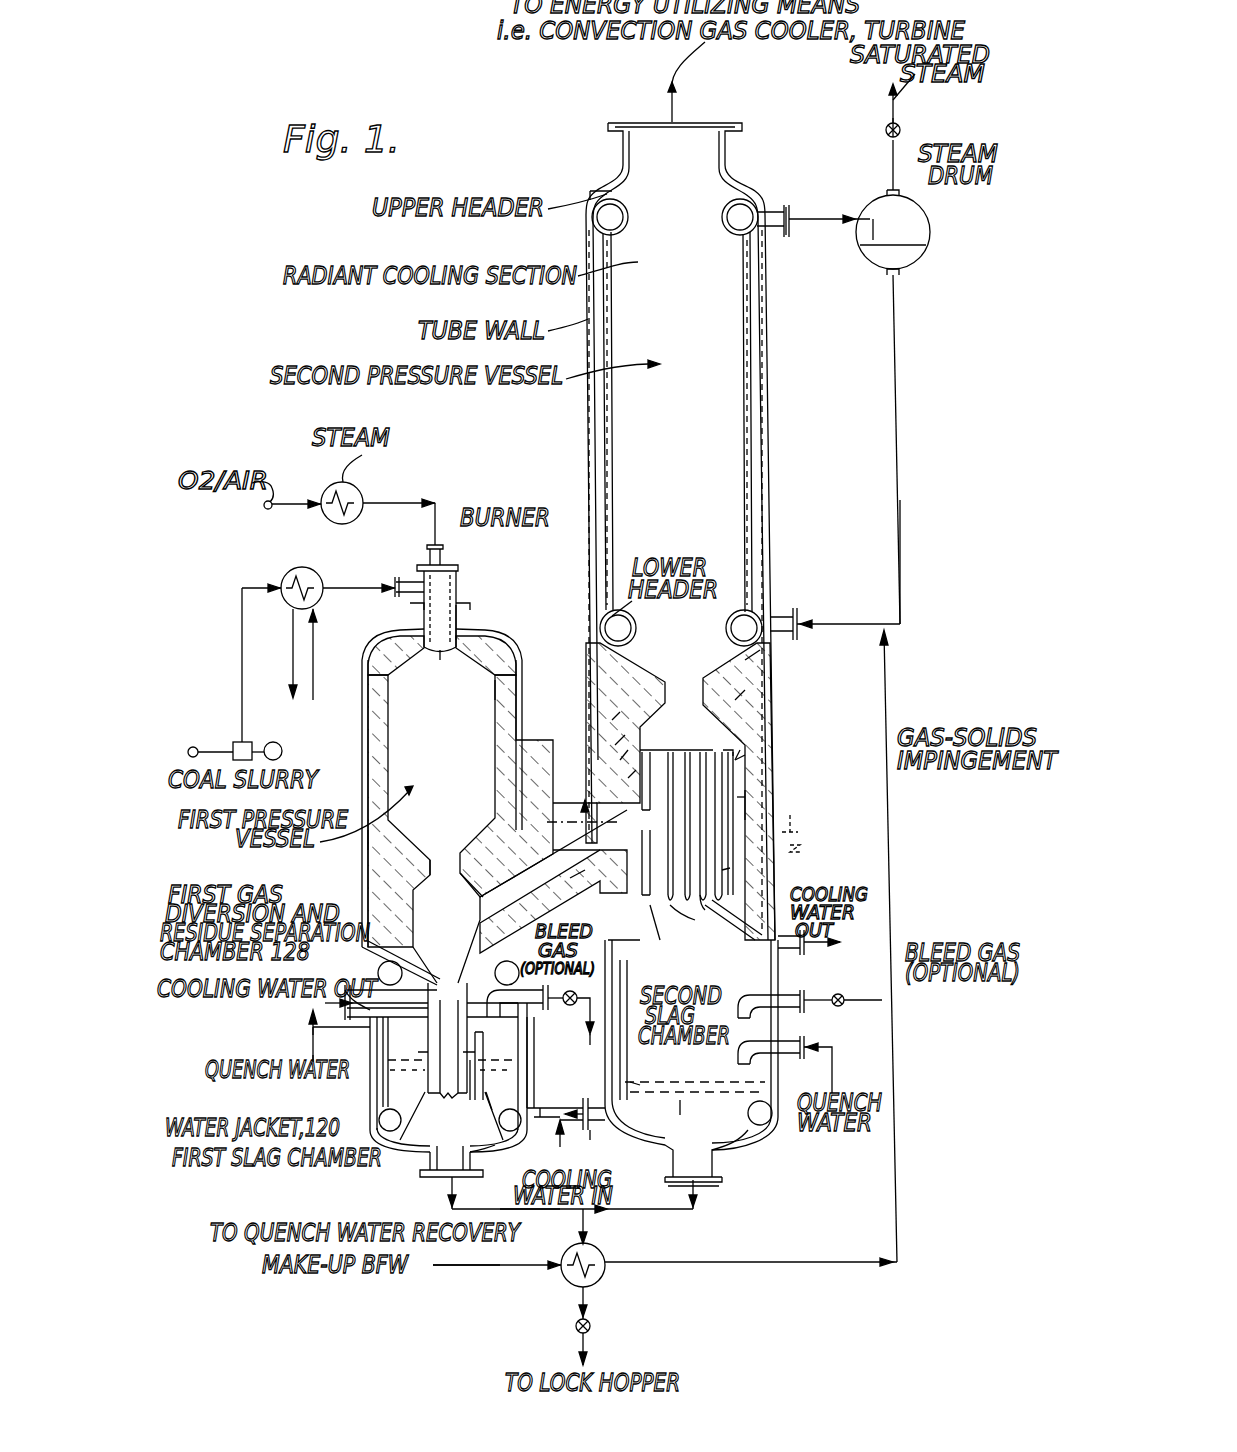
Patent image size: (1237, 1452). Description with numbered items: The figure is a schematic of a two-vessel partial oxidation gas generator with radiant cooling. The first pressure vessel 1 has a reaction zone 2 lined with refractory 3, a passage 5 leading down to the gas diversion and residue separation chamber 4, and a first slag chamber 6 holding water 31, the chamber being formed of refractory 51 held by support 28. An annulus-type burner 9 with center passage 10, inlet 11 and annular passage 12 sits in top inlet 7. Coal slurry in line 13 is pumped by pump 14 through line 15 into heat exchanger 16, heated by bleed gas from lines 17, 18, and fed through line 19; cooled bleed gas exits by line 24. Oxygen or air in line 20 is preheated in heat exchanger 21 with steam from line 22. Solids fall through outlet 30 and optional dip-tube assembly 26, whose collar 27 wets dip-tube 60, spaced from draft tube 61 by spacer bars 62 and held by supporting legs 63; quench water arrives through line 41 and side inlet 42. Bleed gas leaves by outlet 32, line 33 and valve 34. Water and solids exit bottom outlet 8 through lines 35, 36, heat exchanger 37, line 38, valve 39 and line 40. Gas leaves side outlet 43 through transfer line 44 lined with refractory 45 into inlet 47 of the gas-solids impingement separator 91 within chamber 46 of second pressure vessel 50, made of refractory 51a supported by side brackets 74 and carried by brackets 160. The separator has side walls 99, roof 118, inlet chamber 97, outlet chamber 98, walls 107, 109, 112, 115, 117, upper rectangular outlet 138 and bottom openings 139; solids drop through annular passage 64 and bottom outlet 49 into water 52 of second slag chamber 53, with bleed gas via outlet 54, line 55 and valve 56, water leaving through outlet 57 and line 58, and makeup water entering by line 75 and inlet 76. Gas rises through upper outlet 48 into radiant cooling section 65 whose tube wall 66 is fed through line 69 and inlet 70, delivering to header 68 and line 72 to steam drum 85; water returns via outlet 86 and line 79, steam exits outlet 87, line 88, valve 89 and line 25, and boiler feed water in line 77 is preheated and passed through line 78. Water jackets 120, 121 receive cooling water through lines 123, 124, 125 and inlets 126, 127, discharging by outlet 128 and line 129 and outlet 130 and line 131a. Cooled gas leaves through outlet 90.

The pressure vessel 1 is at (441, 788).
The reaction zone 2 is at (460, 791).
The refractory 3 is at (495, 685).
The gas diversion and residue separation chamber 4 is at (437, 947).
The passage 5 is at (444, 865).
The first slag chamber 6 is at (573, 1051).
The top inlet 7 is at (458, 625).
The bottom outlet 8 is at (480, 1160).
The annulus-type burner 9 is at (456, 590).
The center passage 10 is at (428, 555).
The inlet 11 is at (402, 585).
The annular passage 12 is at (460, 605).
The line 13 is at (195, 746).
The pump 14 is at (250, 740).
The line 15 is at (242, 632).
The heat exchanger 16 is at (290, 578).
The insulated line 17 is at (584, 1058).
The insulated line 18 is at (852, 1002).
The line 19 is at (337, 583).
The line 20 is at (293, 500).
The heat exchanger 21 is at (325, 498).
The line 22 is at (372, 470).
The line 24 is at (290, 655).
The line 25 is at (890, 118).
The dip-tube assembly 26 is at (440, 1030).
The water distribution collar 27 is at (415, 980).
The support 28 is at (395, 960).
The outlet 30 is at (455, 975).
The water 31 is at (418, 1150).
The refractory lined outlet 32 is at (530, 1020).
The insulated line 33 is at (582, 1025).
The water cooled control valve 34 is at (571, 992).
The line 35 is at (450, 1190).
The line 36 is at (583, 1212).
The heat exchanger 37 is at (598, 1245).
The line 38 is at (586, 1308).
The valve 39 is at (592, 1330).
The line 40 is at (582, 1352).
The line 41 is at (310, 1032).
The side inlet 42 is at (340, 1050).
The side outlet 43 is at (488, 905).
The transfer line 44 is at (570, 878).
The refractory 45 is at (540, 845).
The second gas diversion and residue separation chamber 46 is at (665, 712).
The inlet 47 is at (625, 802).
The upper outlet 48 is at (690, 708).
The bottom outlet 49 is at (668, 942).
The second pressure vessel 50 is at (762, 420).
The thermal refractory material 51 is at (385, 864).
The thermal refractory material 51a is at (745, 790).
The water 52 is at (690, 1188).
The second slag chamber 53 is at (689, 1049).
The refractory lined outlet 54 is at (805, 995).
The insulated line 55 is at (828, 998).
The water cooled valve 56 is at (843, 996).
The central outlet 57 is at (675, 1148).
The line 58 is at (660, 1210).
The dip-tube 60 is at (450, 1040).
The draft tube 61 is at (530, 1070).
The spacer bars 62 is at (478, 1048).
The supporting legs 63 is at (430, 1126).
The annular passage 64 is at (738, 797).
The radiant cooling section 65 is at (665, 430).
The tube wall 66 is at (762, 358).
The annular header 68 is at (723, 217).
The line 69 is at (820, 618).
The inlet 70 is at (760, 612).
The line 72 is at (800, 213).
The side brackets 74 is at (770, 207).
The line 75 is at (833, 1060).
The inlet 76 is at (808, 1044).
The line 77 is at (452, 1268).
The line 78 is at (885, 688).
The line 79 is at (900, 627).
The steam drum 85 is at (928, 240).
The bottom outlet 86 is at (900, 276).
The upper outlet 87 is at (890, 196).
The line 88 is at (898, 153).
The valve 89 is at (903, 125).
The outlet 90 is at (722, 137).
The gas-solids impingement separator 91 is at (763, 807).
The upstream vertical inlet chamber 97 is at (640, 785).
The downstream vertical outlet chamber 98 is at (825, 848).
The side walls 99 is at (745, 735).
The upstream vertical concave wall 107 is at (638, 745).
The upstream vertical concave wall 109 is at (745, 680).
The intermediate vertical flat wall 112 is at (630, 715).
The downstream vertical convex wall 115 is at (700, 752).
The downstream vertical flat wall 117 is at (748, 710).
The roof 118 is at (640, 765).
The water jacket 120 is at (380, 1122).
The water jacket 121 is at (775, 1160).
The line 123 is at (596, 1140).
The line 124 is at (548, 1125).
The line 125 is at (578, 1110).
The inlet 126 is at (545, 1105).
The inlet 127 is at (636, 1090).
The upper outlet 128 is at (355, 970).
The line 129 is at (345, 968).
The upper outlet 130 is at (722, 870).
The line 131a is at (840, 940).
The upper rectangular outlet 138 is at (735, 760).
The bottom openings 139 is at (705, 910).
The brackets 160 is at (695, 920).